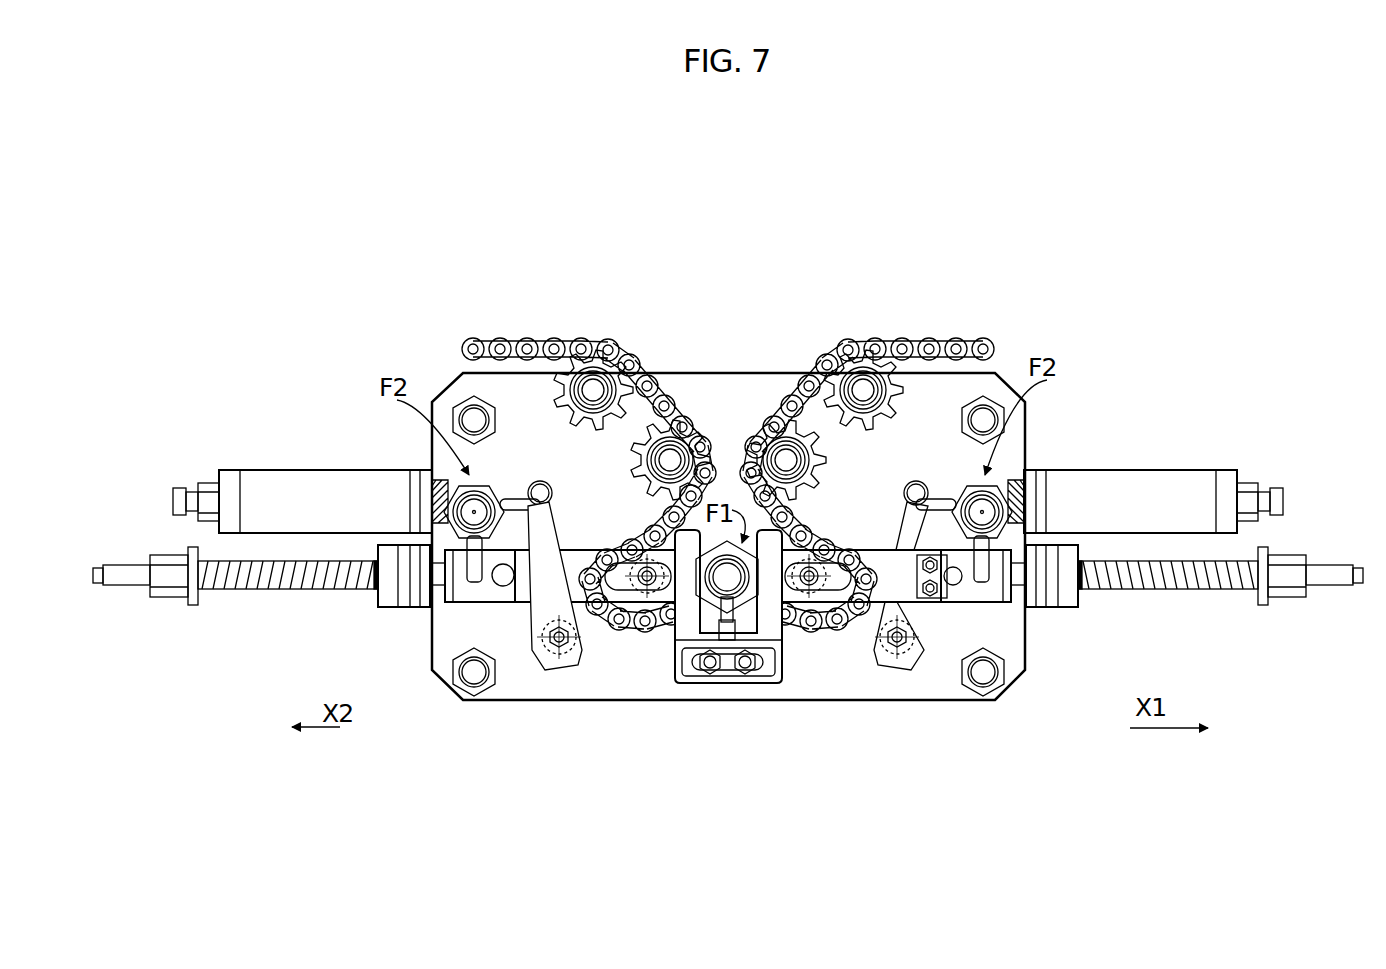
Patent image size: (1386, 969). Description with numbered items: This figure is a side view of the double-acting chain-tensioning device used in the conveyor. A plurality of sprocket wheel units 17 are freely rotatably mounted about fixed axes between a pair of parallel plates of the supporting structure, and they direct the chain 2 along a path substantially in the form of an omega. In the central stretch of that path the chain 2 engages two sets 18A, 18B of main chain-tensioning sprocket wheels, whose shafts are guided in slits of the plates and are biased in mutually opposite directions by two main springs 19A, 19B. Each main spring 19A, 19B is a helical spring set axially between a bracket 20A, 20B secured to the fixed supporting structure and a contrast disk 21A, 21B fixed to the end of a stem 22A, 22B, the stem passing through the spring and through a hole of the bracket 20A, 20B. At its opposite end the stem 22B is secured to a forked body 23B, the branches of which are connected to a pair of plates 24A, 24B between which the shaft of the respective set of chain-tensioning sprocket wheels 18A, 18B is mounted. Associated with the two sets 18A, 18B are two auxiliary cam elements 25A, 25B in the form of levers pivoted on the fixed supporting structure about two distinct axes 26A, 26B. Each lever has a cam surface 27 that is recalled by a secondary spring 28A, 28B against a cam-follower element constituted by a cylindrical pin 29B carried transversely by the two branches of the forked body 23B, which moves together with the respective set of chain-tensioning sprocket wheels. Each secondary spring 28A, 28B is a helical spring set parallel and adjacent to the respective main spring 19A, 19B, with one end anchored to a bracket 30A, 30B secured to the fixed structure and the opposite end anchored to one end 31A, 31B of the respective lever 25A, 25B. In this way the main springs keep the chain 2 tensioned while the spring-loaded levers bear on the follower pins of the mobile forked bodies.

The chain 2 is at (508, 302).
The sprocket wheel units 17 is at (554, 395).
The set of main chain-tensioning sprocket wheels 18A is at (813, 618).
The set of main chain-tensioning sprocket wheels 18B is at (653, 620).
The main spring 19A is at (1239, 592).
The main spring 19B is at (265, 590).
The bracket 20A is at (1068, 593).
The bracket 20B is at (387, 594).
The contrast disk 21A is at (1306, 607).
The contrast disk 21B is at (193, 607).
The stem 22A is at (1017, 585).
The stem 22B is at (438, 578).
The forked body 23B is at (461, 594).
The plates 24A is at (862, 568).
The plates 24B is at (571, 560).
The auxiliary cam element 25A is at (936, 625).
The auxiliary cam element 25B is at (534, 655).
The axis 26A is at (924, 667).
The axis 26B is at (567, 648).
The cam surface 27 is at (517, 612).
The secondary spring 28A is at (1004, 488).
The secondary spring 28B is at (452, 484).
The cylindrical pin 29B is at (494, 588).
The bracket 30A is at (1132, 497).
The bracket 30B is at (288, 489).
The end of lever 31A is at (916, 489).
The end of lever 31B is at (536, 491).